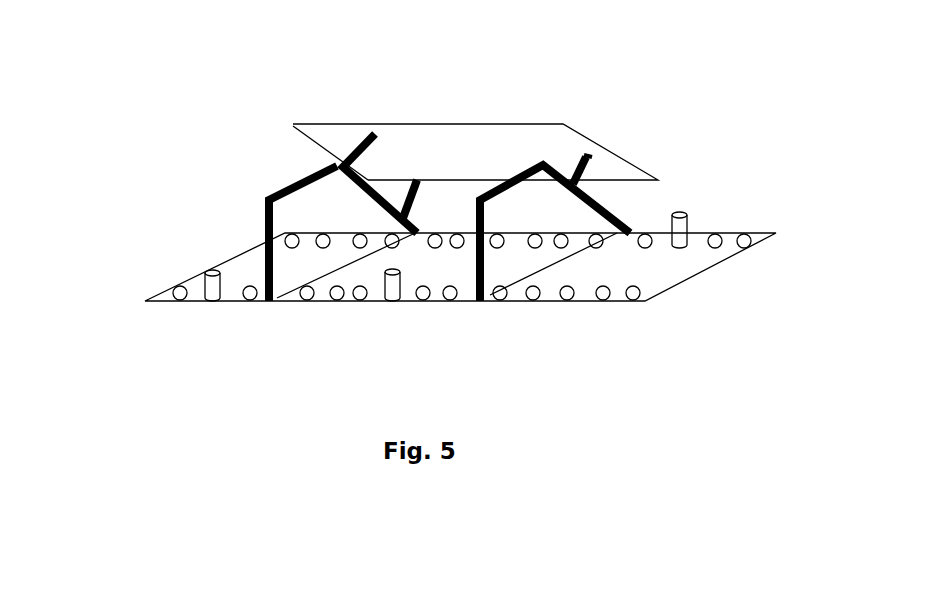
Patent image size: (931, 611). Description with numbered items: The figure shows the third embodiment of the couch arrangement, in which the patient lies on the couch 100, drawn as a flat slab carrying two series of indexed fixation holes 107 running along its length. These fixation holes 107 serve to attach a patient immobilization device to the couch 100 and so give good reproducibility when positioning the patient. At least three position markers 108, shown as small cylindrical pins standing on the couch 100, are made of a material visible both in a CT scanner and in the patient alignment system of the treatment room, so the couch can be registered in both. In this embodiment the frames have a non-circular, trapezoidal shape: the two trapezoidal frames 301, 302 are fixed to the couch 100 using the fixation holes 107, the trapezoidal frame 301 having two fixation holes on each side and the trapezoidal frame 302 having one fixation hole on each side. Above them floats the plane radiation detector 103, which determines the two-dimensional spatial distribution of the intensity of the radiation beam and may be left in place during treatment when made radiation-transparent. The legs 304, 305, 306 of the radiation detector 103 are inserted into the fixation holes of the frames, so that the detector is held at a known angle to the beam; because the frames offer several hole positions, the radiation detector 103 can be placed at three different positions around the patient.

The couch 100 is at (249, 268).
The plane radiation detector 103 is at (403, 122).
The fixation holes 107 is at (605, 298).
The position markers 108 is at (215, 300).
The trapezoidal frame 301 is at (268, 196).
The trapezoidal frame 302 is at (487, 295).
The leg 304 is at (343, 165).
The leg 305 is at (417, 180).
The leg 306 is at (588, 160).